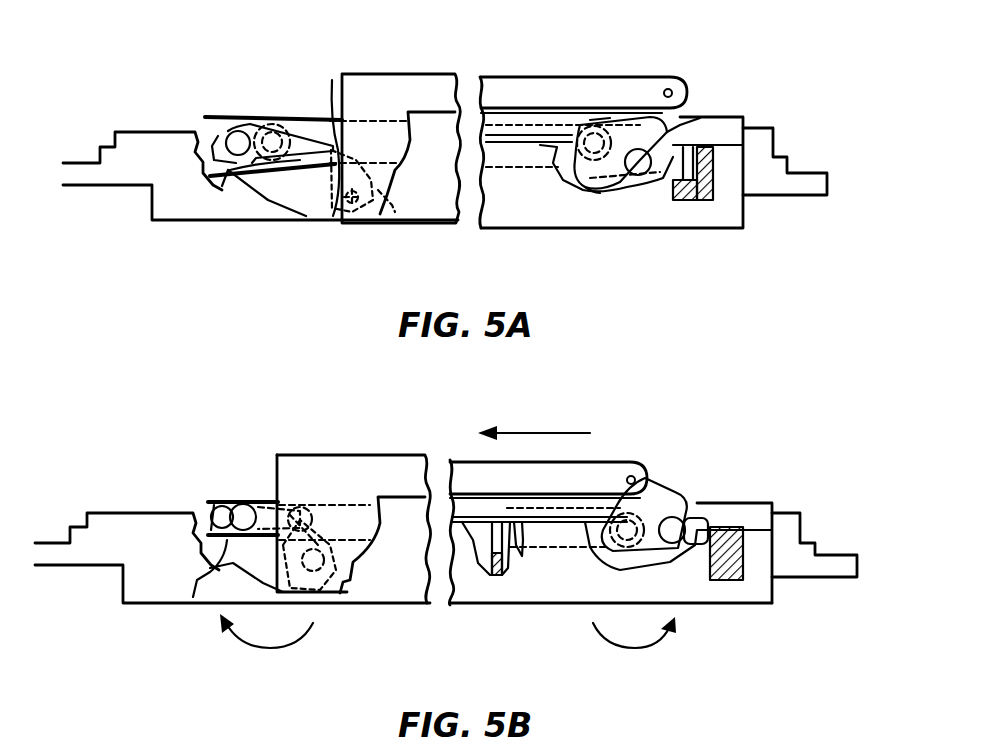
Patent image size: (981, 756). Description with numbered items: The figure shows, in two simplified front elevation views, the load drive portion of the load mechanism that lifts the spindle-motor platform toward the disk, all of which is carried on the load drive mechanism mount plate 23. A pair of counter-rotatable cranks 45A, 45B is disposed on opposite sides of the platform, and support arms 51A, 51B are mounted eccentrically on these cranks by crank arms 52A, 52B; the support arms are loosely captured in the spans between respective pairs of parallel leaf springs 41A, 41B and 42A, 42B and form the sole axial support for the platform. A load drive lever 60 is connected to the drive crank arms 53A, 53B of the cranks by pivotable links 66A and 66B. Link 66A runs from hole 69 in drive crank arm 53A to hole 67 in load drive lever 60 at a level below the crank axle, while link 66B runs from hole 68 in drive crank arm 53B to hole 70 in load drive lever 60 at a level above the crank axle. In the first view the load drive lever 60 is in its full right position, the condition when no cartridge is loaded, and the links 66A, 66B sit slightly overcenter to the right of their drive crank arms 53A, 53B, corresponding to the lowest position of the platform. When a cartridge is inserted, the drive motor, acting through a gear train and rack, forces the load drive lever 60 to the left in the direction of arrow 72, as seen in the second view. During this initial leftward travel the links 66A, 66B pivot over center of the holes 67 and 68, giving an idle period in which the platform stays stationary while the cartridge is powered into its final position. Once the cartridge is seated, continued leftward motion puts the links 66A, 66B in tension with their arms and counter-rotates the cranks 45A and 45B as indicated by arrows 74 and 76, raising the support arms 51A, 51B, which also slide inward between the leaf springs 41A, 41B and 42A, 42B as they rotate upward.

In FIG. 5B, the load drive mechanism mount plate 23 is at (407, 606).
In FIG. 5A, the leaf spring 41A is at (242, 117).
In FIG. 5B, the leaf spring 41A is at (230, 502).
In FIG. 5A, the leaf spring 41B is at (223, 187).
In FIG. 5B, the leaf spring 41B is at (232, 558).
In FIG. 5A, the leaf spring 42A is at (513, 130).
In FIG. 5B, the leaf spring 42A is at (700, 514).
In FIG. 5A, the leaf spring 42B is at (512, 175).
In FIG. 5B, the leaf spring 42B is at (676, 566).
In FIG. 5A, the crank 45A is at (303, 113).
In FIG. 5A, the crank 45B is at (603, 120).
In FIG. 5A, the support arm 51A is at (226, 147).
In FIG. 5A, the support arm 51B is at (648, 178).
In FIG. 5A, the crank arm 52A is at (256, 165).
In FIG. 5A, the crank arm 52B is at (718, 116).
In FIG. 5A, the drive crank arm 53A is at (313, 177).
In FIG. 5A, the drive crank arm 53B is at (618, 121).
In FIG. 5A, the load drive lever 60 is at (482, 77).
In FIG. 5B, the load drive lever 60 is at (450, 460).
In FIG. 5A, the pivotable link 66A is at (329, 216).
In FIG. 5B, the pivotable link 66A is at (343, 605).
In FIG. 5A, the pivotable link 66B is at (700, 120).
In FIG. 5B, the pivotable link 66B is at (650, 492).
In FIG. 5A, the hole 67 is at (395, 212).
In FIG. 5A, the hole 68 is at (596, 191).
In FIG. 5A, the hole 69 is at (332, 80).
In FIG. 5A, the hole 70 is at (684, 82).
In FIG. 5B, the arrow 72 is at (548, 433).
In FIG. 5B, the arrow 74 is at (283, 648).
In FIG. 5B, the arrow 76 is at (595, 628).